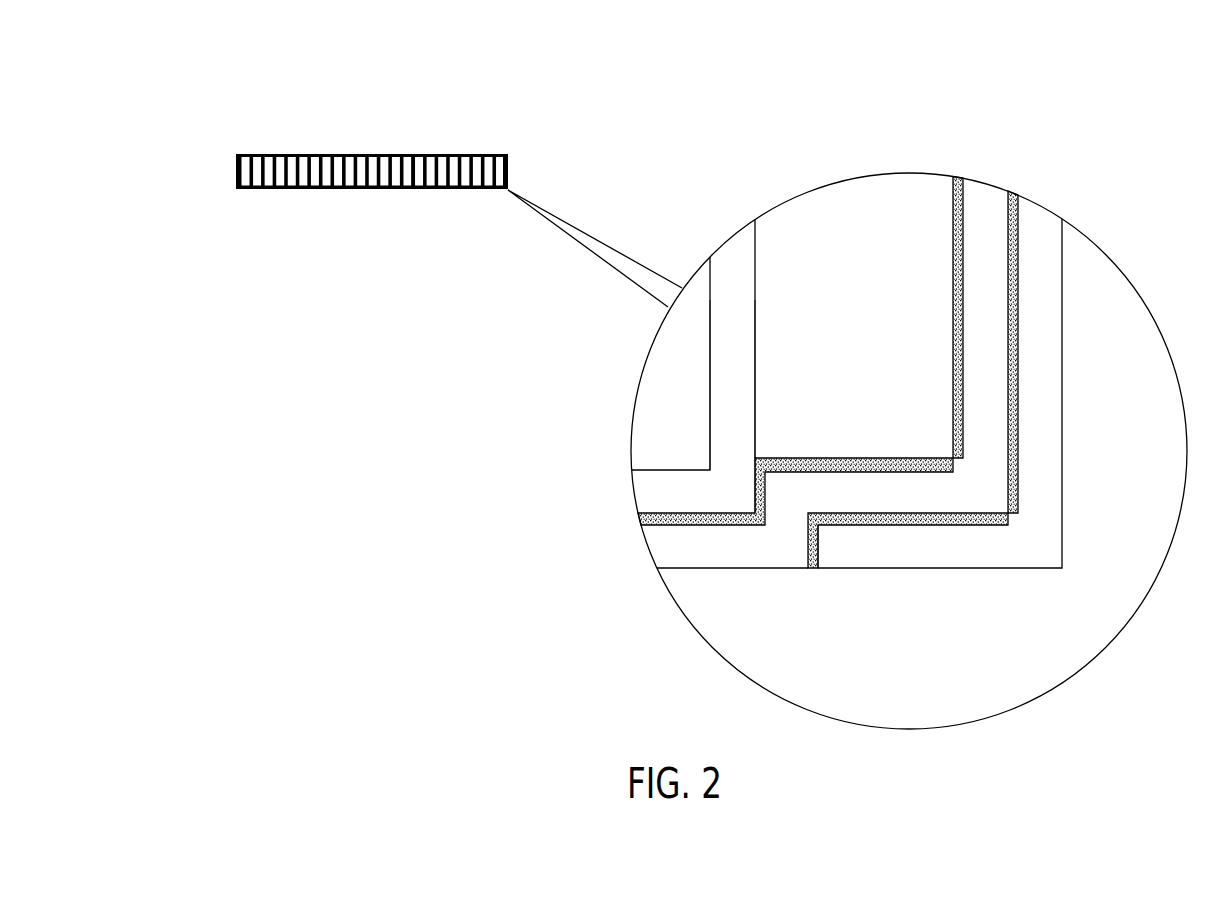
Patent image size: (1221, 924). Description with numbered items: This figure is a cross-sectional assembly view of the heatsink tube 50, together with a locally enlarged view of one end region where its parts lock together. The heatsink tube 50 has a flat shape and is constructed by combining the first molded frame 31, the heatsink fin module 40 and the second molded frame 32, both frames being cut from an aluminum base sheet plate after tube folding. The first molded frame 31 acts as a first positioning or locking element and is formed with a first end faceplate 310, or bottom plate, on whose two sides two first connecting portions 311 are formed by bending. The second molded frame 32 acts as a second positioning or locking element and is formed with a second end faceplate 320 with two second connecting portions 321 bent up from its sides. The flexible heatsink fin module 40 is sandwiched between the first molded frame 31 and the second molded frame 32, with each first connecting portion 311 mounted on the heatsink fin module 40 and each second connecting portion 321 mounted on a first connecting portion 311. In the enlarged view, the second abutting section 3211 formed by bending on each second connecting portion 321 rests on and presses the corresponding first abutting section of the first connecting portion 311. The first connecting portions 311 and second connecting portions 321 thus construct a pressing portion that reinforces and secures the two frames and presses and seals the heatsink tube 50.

The heatsink tube 50 is at (431, 136).
The second molded frame 32 is at (393, 155).
The second end faceplate 320 is at (350, 155).
The first molded frame 31 is at (370, 190).
The first end faceplate 310 is at (330, 190).
The first connecting portion 311 is at (243, 157).
The second connecting portion 321 is at (240, 163).
The second abutting section 3211 is at (241, 190).
The heatsink fin module 40 is at (414, 176).